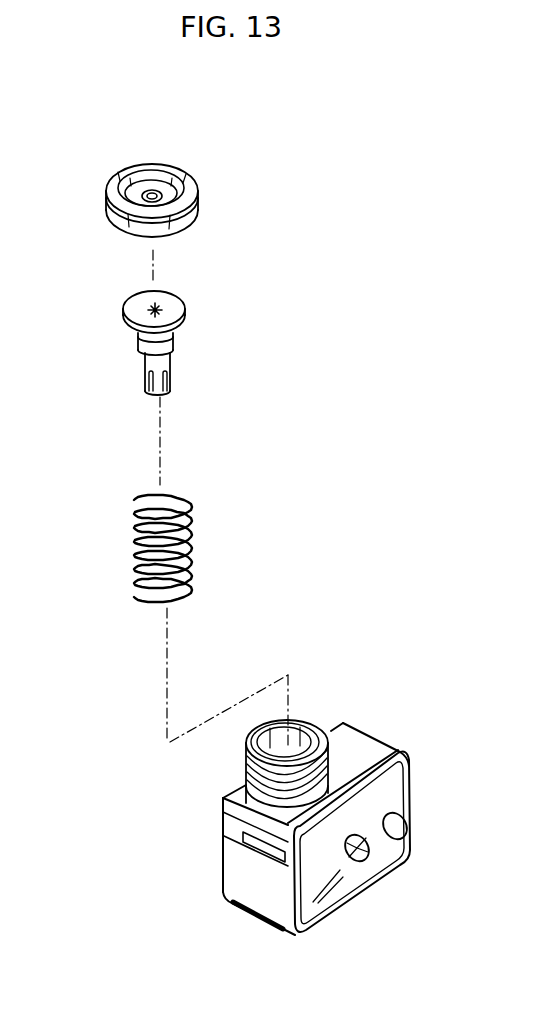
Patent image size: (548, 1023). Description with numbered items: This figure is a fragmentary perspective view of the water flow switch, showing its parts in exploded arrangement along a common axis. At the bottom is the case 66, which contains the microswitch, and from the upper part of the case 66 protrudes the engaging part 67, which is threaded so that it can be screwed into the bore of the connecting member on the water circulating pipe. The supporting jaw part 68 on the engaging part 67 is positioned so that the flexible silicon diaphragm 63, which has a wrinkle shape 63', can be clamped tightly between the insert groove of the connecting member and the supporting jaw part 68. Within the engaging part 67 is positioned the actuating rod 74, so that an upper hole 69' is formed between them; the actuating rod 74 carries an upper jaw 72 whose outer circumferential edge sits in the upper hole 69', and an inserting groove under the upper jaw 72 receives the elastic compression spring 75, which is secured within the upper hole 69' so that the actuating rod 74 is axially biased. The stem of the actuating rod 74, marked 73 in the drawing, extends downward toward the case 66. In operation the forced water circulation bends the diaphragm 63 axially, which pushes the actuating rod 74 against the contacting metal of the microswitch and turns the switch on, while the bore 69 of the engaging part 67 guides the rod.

The flexible silicon diaphragm 63 is at (210, 205).
The wrinkle shape 63' is at (205, 173).
The upper jaw 72 is at (138, 332).
The actuating rod 74 is at (184, 350).
The slotted stem of screw 73 is at (174, 367).
The elastic compression spring 75 is at (194, 552).
The threaded bore 69 is at (298, 706).
The upper hole 69' is at (220, 516).
The engaging part 67 is at (343, 724).
The supporting jaw part 68 is at (232, 794).
The case 66 is at (234, 877).